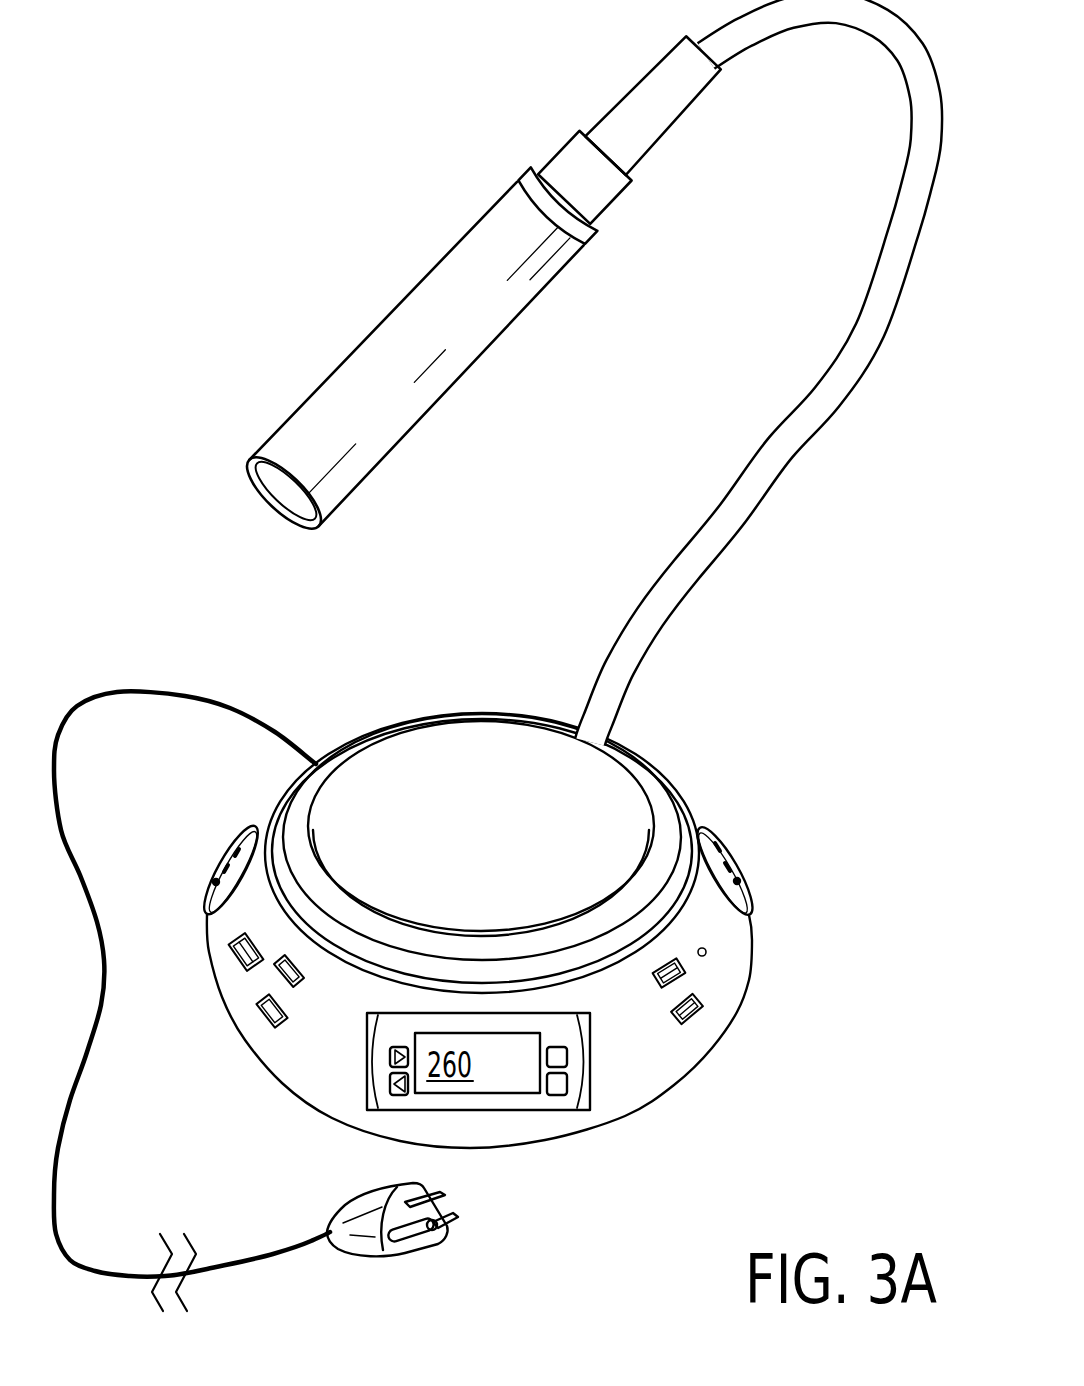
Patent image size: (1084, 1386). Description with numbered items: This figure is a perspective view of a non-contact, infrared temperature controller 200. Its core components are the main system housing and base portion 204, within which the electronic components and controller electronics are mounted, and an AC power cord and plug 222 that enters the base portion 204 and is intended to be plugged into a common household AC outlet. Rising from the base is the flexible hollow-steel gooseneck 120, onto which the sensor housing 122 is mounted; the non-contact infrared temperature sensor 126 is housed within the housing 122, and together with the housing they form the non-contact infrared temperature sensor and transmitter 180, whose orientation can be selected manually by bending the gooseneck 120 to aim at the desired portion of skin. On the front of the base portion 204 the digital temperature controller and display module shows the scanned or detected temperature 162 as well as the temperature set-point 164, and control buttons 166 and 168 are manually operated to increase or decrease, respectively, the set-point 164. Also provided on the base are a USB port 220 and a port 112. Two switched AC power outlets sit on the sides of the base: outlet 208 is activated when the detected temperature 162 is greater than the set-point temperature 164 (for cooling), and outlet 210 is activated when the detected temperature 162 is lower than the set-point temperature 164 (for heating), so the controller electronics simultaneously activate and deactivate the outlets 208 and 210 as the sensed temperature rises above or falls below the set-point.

The non-contact, infrared temperature controller 200 is at (207, 140).
The flexible goose-neck tubing conduit 120 is at (780, 444).
The non-contact IR temperature probe housing 122 is at (403, 296).
The non-contact, infrared temperature probe 126 is at (270, 500).
The non-contact infrared temperature sensor and transmitter 180 is at (497, 809).
The switched AC power output with falling temperature (for heating) 210 is at (245, 832).
The switched AC power output with rising temperature (for cooling) 208 is at (713, 832).
The base portion 204 is at (742, 948).
The USB port 220 is at (697, 1022).
The port 112 is at (231, 955).
The set point increase 166 is at (388, 1053).
The set point decrease 168 is at (398, 1093).
The scanned temperature read out 162 is at (540, 1033).
The set point read out 164 is at (540, 1097).
The AC power cord and plug 222 is at (388, 1257).